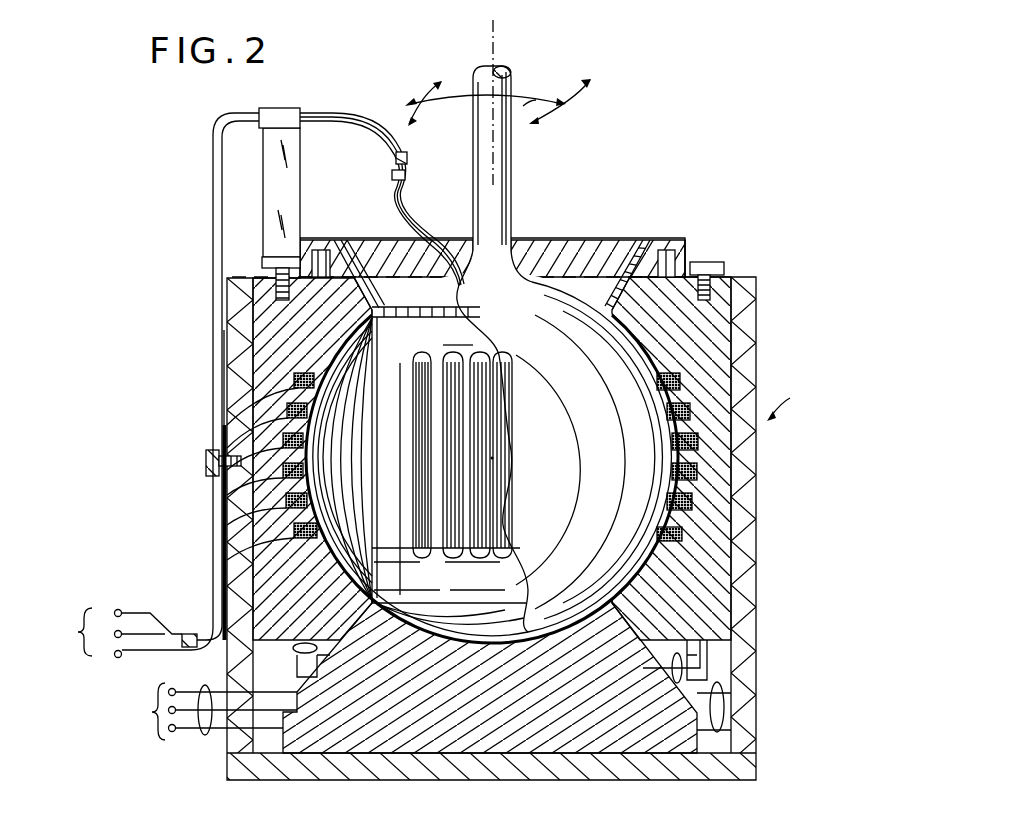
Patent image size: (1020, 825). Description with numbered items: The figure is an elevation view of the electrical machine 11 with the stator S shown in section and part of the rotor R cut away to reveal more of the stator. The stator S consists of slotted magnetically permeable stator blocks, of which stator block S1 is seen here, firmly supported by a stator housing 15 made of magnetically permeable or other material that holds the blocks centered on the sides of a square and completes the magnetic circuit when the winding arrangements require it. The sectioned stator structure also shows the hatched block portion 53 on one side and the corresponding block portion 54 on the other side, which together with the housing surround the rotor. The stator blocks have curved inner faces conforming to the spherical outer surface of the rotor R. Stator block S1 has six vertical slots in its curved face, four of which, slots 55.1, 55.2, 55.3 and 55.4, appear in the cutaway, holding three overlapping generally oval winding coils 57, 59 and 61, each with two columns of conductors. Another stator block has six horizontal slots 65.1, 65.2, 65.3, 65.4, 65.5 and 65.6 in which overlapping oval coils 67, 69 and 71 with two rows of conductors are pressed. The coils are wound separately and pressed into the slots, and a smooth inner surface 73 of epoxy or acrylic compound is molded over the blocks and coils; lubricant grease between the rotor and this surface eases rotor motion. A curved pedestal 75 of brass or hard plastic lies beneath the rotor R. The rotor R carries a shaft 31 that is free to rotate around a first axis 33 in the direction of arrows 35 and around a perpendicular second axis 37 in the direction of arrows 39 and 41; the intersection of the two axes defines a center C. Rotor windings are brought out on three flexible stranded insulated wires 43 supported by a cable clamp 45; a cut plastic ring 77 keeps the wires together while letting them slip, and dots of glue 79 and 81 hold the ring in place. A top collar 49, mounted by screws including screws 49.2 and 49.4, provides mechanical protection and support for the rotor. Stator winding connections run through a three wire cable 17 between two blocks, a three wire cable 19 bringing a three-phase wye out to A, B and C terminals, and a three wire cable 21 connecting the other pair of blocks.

The electrical machine 11 is at (741, 166).
The stator housing 15 is at (757, 344).
The three wire cable 17 is at (727, 710).
The three wire cable 19 is at (207, 737).
The three wire cable 21 is at (297, 653).
The shaft 31 is at (513, 202).
The first axis 33 is at (504, 64).
The arrows 35 is at (441, 82).
The second axis 37 is at (497, 456).
The arrows 39 is at (461, 104).
The arrows 41 is at (523, 106).
The flexible stranded insulated wires 43 is at (409, 216).
The cable clamp 45 is at (284, 107).
The top collar 49 is at (700, 205).
The screw 49.2 is at (704, 262).
The screw 49.4 is at (272, 260).
The upper socket block 53 is at (295, 318).
The socket block 54 is at (713, 570).
The vertical slot 55.1 is at (397, 574).
The vertical slot 55.2 is at (407, 597).
The vertical slot 55.3 is at (472, 574).
The vertical slot 55.4 is at (477, 597).
The winding coil 57 is at (505, 397).
The winding coil 59 is at (500, 428).
The winding coil 61 is at (500, 466).
The horizontal slot 65.1 is at (297, 534).
The horizontal slot 65.2 is at (288, 505).
The horizontal slot 65.3 is at (208, 458).
The horizontal slot 65.4 is at (286, 442).
The horizontal slot 65.5 is at (290, 410).
The horizontal slot 65.6 is at (298, 375).
The winding coil 67 is at (283, 470).
The winding coil 69 is at (286, 432).
The winding coil 71 is at (283, 380).
The smooth inner surface 73 is at (225, 612).
The curved pedestal 75 is at (668, 745).
The cut plastic ring 77 is at (394, 170).
The dot of glue 79 is at (403, 153).
The dot of glue 81 is at (394, 186).
The center C is at (497, 461).
The rotor R is at (549, 272).
The stator S is at (783, 399).
The stator block S1 is at (325, 523).